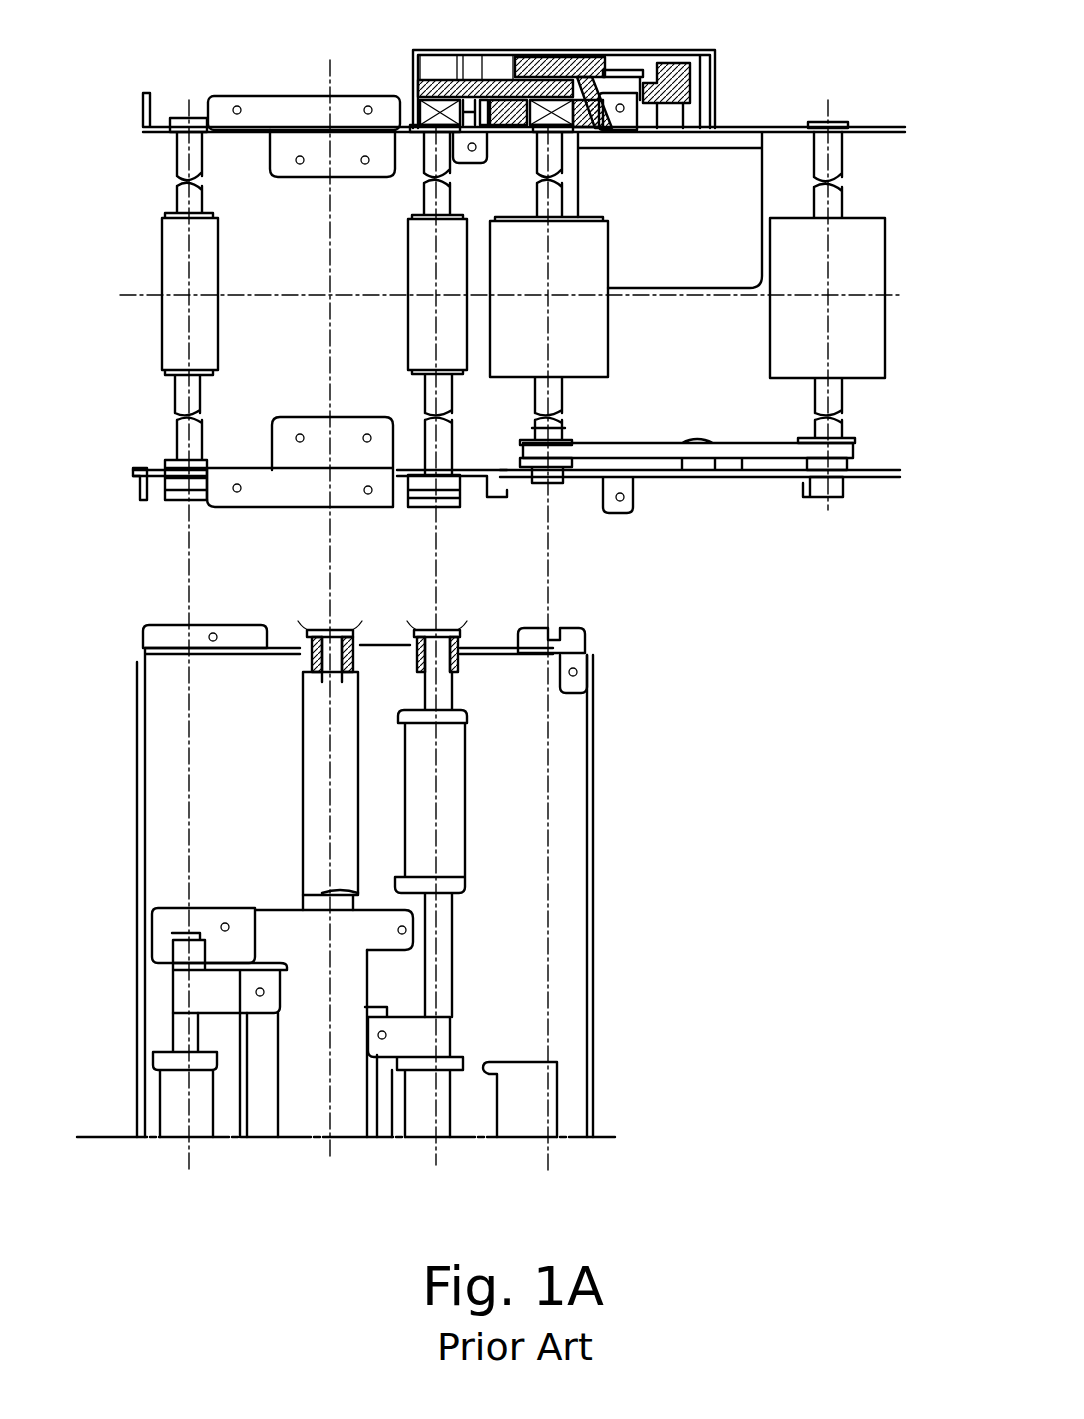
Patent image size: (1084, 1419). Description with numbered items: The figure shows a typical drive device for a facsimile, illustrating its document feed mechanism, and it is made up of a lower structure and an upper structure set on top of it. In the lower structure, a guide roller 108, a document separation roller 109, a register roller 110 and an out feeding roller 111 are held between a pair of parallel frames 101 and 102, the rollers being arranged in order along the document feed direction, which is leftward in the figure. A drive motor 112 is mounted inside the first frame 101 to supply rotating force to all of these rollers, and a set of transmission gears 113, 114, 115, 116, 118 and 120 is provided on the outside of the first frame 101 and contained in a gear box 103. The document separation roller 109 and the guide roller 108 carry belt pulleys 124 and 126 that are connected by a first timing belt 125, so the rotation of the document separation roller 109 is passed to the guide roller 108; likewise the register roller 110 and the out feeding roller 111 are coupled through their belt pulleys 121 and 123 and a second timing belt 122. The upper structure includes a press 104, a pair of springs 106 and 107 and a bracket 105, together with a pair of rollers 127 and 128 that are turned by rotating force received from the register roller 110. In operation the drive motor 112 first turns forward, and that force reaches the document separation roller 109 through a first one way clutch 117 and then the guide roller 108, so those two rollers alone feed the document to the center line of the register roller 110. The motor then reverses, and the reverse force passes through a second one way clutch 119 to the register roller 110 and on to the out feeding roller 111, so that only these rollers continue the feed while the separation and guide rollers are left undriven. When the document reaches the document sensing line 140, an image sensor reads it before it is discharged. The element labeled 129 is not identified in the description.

The first frame 101 is at (160, 75).
The second frame 102 is at (145, 498).
The gear box 103 is at (716, 86).
The press 104 is at (597, 754).
The bracket 105 is at (378, 1138).
The spring 106 is at (455, 1032).
The spring 107 is at (172, 990).
The guide roller 108 is at (884, 338).
The document separation roller 109 is at (562, 395).
The register roller 110 is at (410, 352).
The out feeding roller 111 is at (202, 402).
The drive motor 112 is at (722, 162).
The transmission gear 113 is at (672, 64).
The transmission gear 114 is at (590, 58).
The transmission gear 115 is at (452, 82).
The transmission gear 116 is at (598, 134).
The first one way clutch 117 is at (580, 130).
The transmission gear 118 is at (465, 118).
The second one way clutch 119 is at (422, 110).
The transmission gear 120 is at (400, 135).
The belt pulley 121 is at (464, 508).
The second timing belt 122 is at (395, 496).
The belt pulley 123 is at (178, 502).
The belt pulley 124 is at (572, 476).
The first timing belt 125 is at (742, 462).
The belt pulley 126 is at (855, 458).
The roller 127 is at (454, 699).
The roller 128 is at (322, 726).
The lower nut 129 is at (170, 1082).
The document sensing line 140 is at (330, 72).